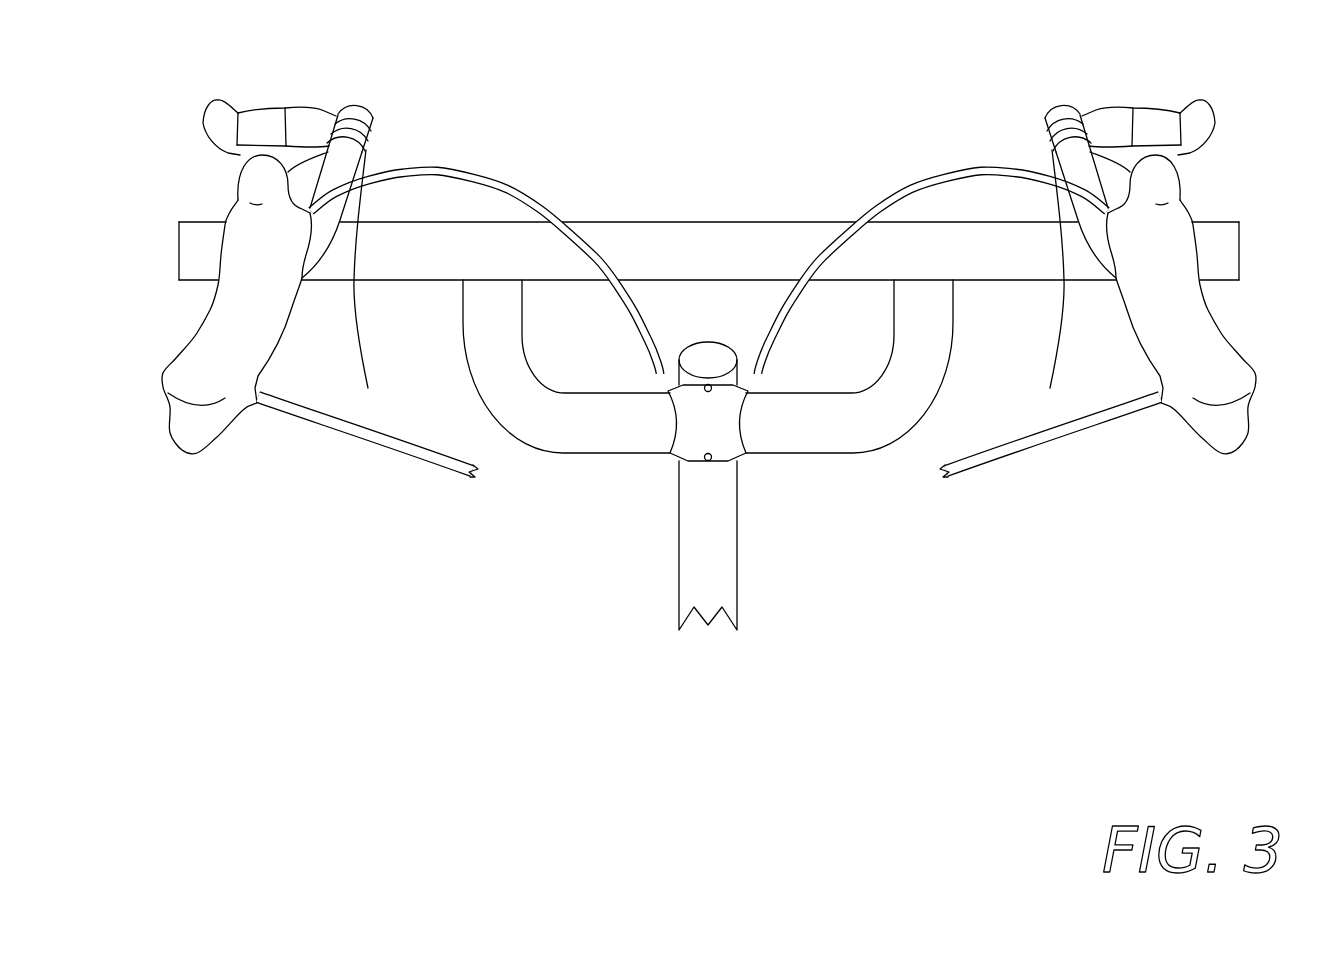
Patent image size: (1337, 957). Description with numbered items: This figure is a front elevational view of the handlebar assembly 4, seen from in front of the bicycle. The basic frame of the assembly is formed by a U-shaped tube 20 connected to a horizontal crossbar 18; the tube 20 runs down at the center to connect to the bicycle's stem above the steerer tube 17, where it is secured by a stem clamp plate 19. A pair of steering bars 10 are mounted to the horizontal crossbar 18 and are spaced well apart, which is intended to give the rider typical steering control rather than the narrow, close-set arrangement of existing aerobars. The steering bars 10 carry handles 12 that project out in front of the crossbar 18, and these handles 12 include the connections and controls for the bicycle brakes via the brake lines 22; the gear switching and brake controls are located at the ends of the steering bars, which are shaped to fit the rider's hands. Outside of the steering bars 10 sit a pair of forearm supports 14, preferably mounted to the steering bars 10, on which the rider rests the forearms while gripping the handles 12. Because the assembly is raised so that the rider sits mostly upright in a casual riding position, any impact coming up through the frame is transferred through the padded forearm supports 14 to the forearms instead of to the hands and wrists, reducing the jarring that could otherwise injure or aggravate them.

The handlebar assembly 4 is at (918, 106).
The steering bars 10 is at (368, 110).
The handles 12 is at (213, 300).
The forearm supports 14 is at (263, 108).
The steerer tube 17 is at (738, 550).
The horizontal crossbar 18 is at (633, 222).
The stem clamp plate 19 is at (742, 453).
The U-shaped tube 20 is at (627, 393).
The brake lines 22 is at (346, 423).